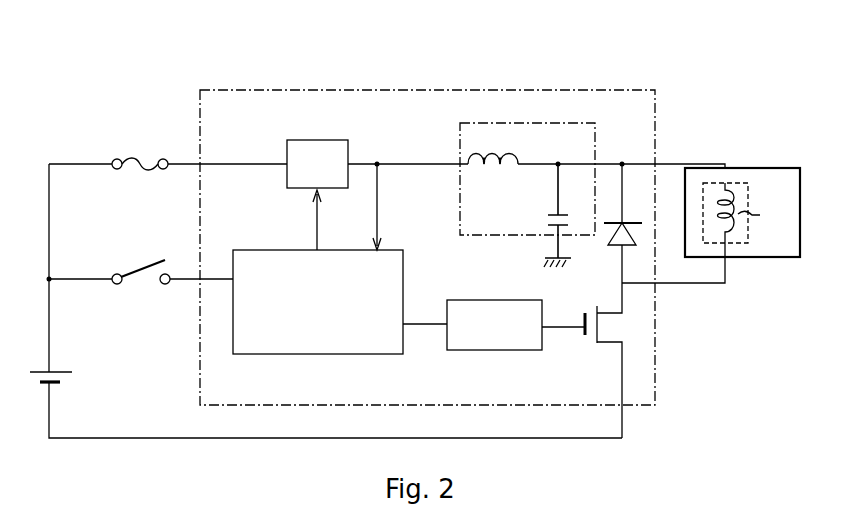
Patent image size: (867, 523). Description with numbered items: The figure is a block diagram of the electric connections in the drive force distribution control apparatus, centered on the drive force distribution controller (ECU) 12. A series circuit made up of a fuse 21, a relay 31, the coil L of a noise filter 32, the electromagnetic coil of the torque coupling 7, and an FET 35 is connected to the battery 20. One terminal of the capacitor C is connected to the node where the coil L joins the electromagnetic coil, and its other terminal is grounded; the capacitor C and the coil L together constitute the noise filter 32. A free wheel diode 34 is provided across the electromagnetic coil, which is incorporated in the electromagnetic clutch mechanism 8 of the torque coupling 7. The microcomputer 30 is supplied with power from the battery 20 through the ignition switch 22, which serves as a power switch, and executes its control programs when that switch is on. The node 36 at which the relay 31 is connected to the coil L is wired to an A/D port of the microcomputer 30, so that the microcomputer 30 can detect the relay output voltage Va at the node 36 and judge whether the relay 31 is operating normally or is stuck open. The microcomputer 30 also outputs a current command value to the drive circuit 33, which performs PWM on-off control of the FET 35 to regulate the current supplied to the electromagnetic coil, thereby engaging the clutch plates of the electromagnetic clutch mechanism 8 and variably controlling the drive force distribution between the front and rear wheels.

The drive force distribution controller (ECU) 12 is at (476, 86).
The fuse 21 is at (148, 160).
The ignition switch 22 is at (142, 262).
The battery 20 is at (62, 368).
The relay 31 is at (316, 140).
The microcomputer 30 is at (262, 250).
The node 36 is at (404, 125).
The noise filter 32 is at (527, 123).
The drive circuit 33 is at (496, 300).
The free wheel diode 34 is at (622, 223).
The FET 35 is at (618, 325).
The torque coupling 7 is at (742, 213).
The electromagnetic clutch mechanism 8 is at (735, 257).